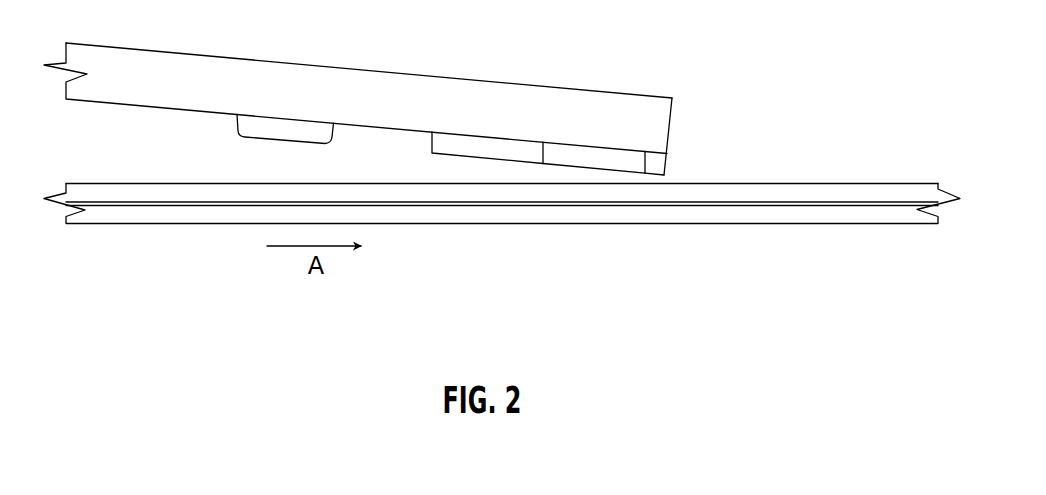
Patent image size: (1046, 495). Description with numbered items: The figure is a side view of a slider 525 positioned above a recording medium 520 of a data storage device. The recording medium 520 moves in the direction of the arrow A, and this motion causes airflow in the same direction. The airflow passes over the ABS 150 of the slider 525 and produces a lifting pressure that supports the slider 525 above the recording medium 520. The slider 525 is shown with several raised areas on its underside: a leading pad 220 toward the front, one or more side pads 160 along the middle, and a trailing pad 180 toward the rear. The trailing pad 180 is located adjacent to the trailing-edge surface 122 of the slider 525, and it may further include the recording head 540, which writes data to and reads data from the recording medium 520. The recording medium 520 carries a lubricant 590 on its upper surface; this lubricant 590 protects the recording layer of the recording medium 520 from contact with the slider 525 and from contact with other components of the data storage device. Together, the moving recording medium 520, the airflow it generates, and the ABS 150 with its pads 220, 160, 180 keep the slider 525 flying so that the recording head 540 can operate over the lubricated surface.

The ABS 150 is at (123, 120).
The slider 525 is at (355, 69).
The trailing-edge surface 122 is at (692, 116).
The leading pad 220 is at (260, 135).
The side pads 160 is at (432, 154).
The trailing pad 180 is at (582, 158).
The recording head 540 is at (657, 152).
The recording medium 520 is at (167, 224).
The lubricant 590 is at (872, 184).